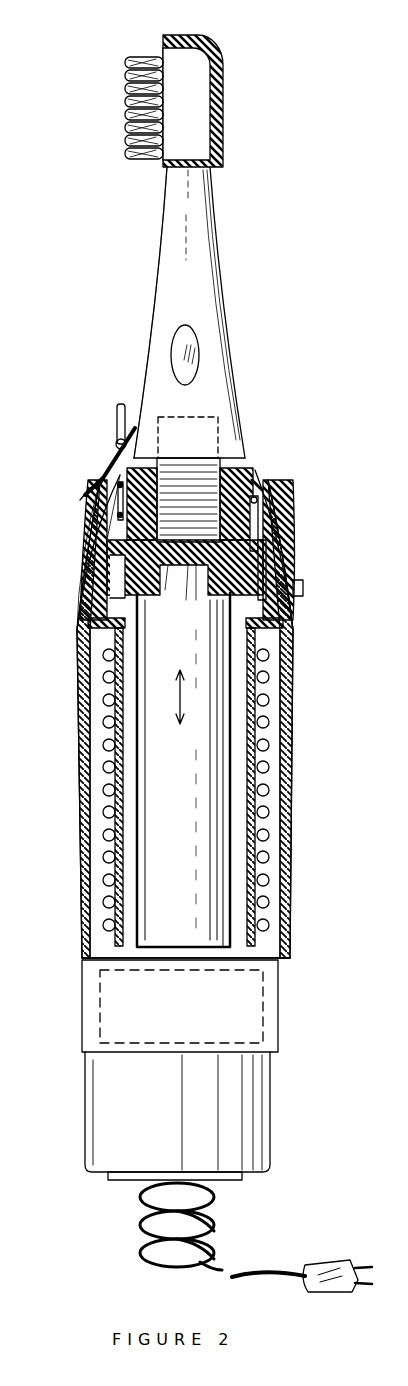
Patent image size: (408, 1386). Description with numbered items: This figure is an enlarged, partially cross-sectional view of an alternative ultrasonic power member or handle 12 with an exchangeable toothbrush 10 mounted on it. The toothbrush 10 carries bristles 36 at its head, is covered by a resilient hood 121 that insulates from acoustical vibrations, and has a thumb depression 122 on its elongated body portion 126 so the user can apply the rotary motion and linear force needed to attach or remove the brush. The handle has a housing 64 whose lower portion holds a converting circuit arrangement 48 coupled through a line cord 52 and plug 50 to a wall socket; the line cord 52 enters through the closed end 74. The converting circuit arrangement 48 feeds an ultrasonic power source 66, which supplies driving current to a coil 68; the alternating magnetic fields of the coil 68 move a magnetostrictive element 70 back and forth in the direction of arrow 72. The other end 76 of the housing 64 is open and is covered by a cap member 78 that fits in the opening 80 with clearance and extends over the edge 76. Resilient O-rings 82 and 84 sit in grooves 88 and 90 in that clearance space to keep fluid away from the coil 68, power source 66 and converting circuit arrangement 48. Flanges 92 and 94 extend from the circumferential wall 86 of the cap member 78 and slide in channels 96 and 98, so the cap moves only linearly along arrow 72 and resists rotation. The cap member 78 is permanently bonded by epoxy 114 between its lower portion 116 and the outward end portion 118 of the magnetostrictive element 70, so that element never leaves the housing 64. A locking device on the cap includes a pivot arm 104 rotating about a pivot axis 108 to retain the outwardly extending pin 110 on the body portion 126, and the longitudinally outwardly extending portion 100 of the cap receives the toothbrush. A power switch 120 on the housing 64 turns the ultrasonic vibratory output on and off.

The ultrasonic toothbrush 10 is at (218, 215).
The ultrasonic power member 12 is at (283, 658).
The bristles 36 is at (140, 52).
The converting circuit arrangement 48 is at (235, 1103).
The plug 50 is at (326, 1262).
The line cord 52 is at (216, 1217).
The housing 64 is at (278, 932).
The ultrasonic power source 66 is at (255, 995).
The coil 68 is at (268, 752).
The magnetostrictive element 70 is at (185, 869).
The arrow 72 is at (182, 697).
The closed end 74 is at (108, 1178).
The open end 76 is at (291, 502).
The cap member 78 is at (250, 470).
The opening 80 is at (262, 485).
The O-ring 82 is at (118, 505).
The O-ring 84 is at (120, 522).
The circumferential wall 86 is at (118, 545).
The groove 88 is at (258, 500).
The groove 90 is at (262, 518).
The flange 92 is at (262, 538).
The flange 94 is at (112, 575).
The channel 96 is at (268, 560).
The channel 98 is at (130, 610).
The longitudinally outwardly extending portion 100 is at (215, 420).
The pivot arm 104 is at (122, 448).
The pivot axis 108 is at (100, 478).
The pin 110 is at (116, 415).
The epoxy 114 is at (172, 600).
The lower portion 116 is at (199, 587).
The outward end portion 118 is at (130, 625).
The power switch 120 is at (303, 588).
The resilient hood 121 is at (226, 105).
The thumb depression 122 is at (190, 337).
The elongated body portion 126 is at (163, 296).